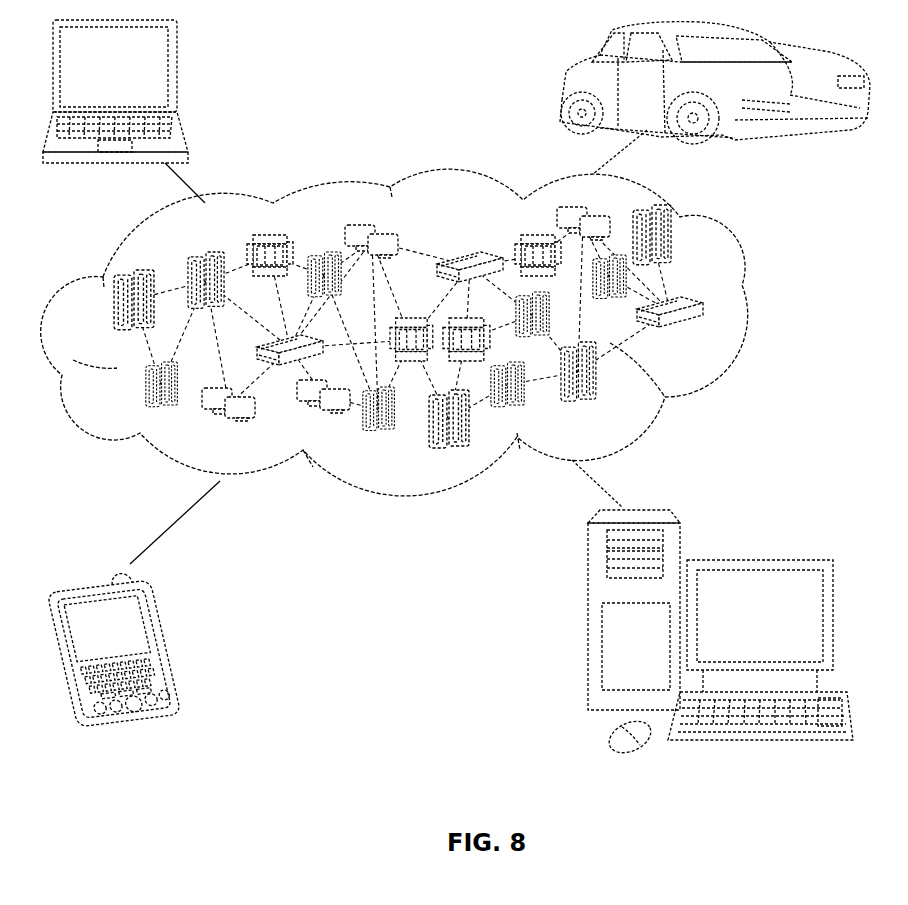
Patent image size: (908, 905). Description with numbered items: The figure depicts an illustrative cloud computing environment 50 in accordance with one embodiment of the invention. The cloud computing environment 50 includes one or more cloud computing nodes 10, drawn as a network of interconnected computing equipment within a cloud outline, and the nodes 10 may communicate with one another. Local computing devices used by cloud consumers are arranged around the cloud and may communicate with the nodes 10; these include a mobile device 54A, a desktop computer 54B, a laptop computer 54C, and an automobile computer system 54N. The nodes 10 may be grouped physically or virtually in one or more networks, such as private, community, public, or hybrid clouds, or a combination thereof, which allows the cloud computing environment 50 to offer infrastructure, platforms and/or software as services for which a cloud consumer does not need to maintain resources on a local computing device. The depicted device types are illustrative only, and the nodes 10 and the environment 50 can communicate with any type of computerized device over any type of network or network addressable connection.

The cloud computing node 10 is at (712, 339).
The cloud computing environment 50 is at (427, 332).
The mobile device 54A is at (167, 643).
The desktop computer 54B is at (757, 560).
The laptop computer 54C is at (176, 72).
The automobile computer system 54N is at (567, 87).